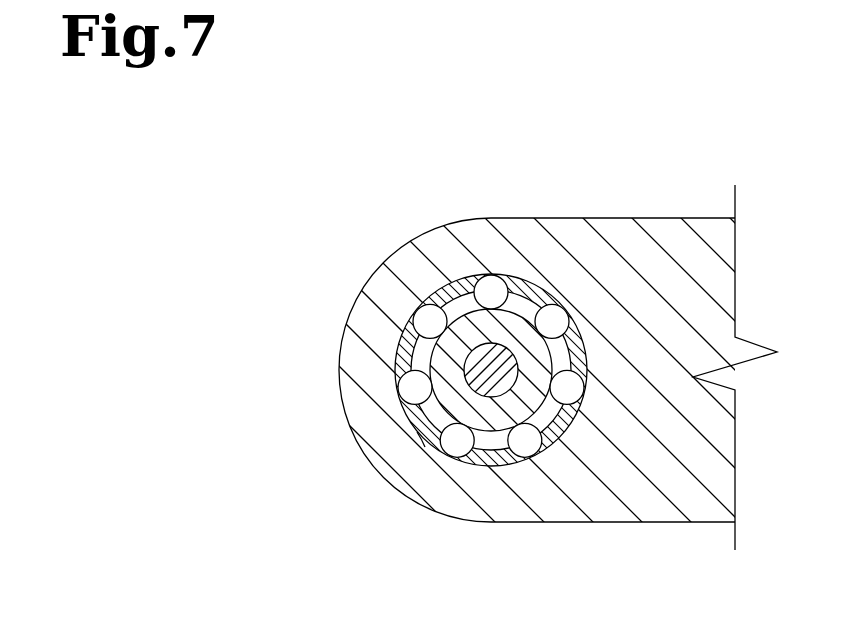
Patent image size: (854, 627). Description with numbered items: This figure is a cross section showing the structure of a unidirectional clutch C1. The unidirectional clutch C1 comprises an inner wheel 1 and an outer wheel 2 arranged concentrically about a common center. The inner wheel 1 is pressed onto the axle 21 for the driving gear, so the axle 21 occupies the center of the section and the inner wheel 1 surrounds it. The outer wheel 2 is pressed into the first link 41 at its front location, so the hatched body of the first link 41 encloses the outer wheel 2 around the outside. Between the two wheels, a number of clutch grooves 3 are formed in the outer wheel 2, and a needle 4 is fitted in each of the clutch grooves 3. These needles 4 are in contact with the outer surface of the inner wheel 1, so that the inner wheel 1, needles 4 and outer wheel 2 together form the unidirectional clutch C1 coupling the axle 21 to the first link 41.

The inner wheel 1 is at (533, 360).
The outer wheel 2 is at (487, 455).
The clutch grooves 3 is at (455, 300).
The needles 4 is at (487, 283).
The axle 21 is at (482, 372).
The first link 41 is at (668, 230).
The unidirectional clutch C1 is at (417, 432).